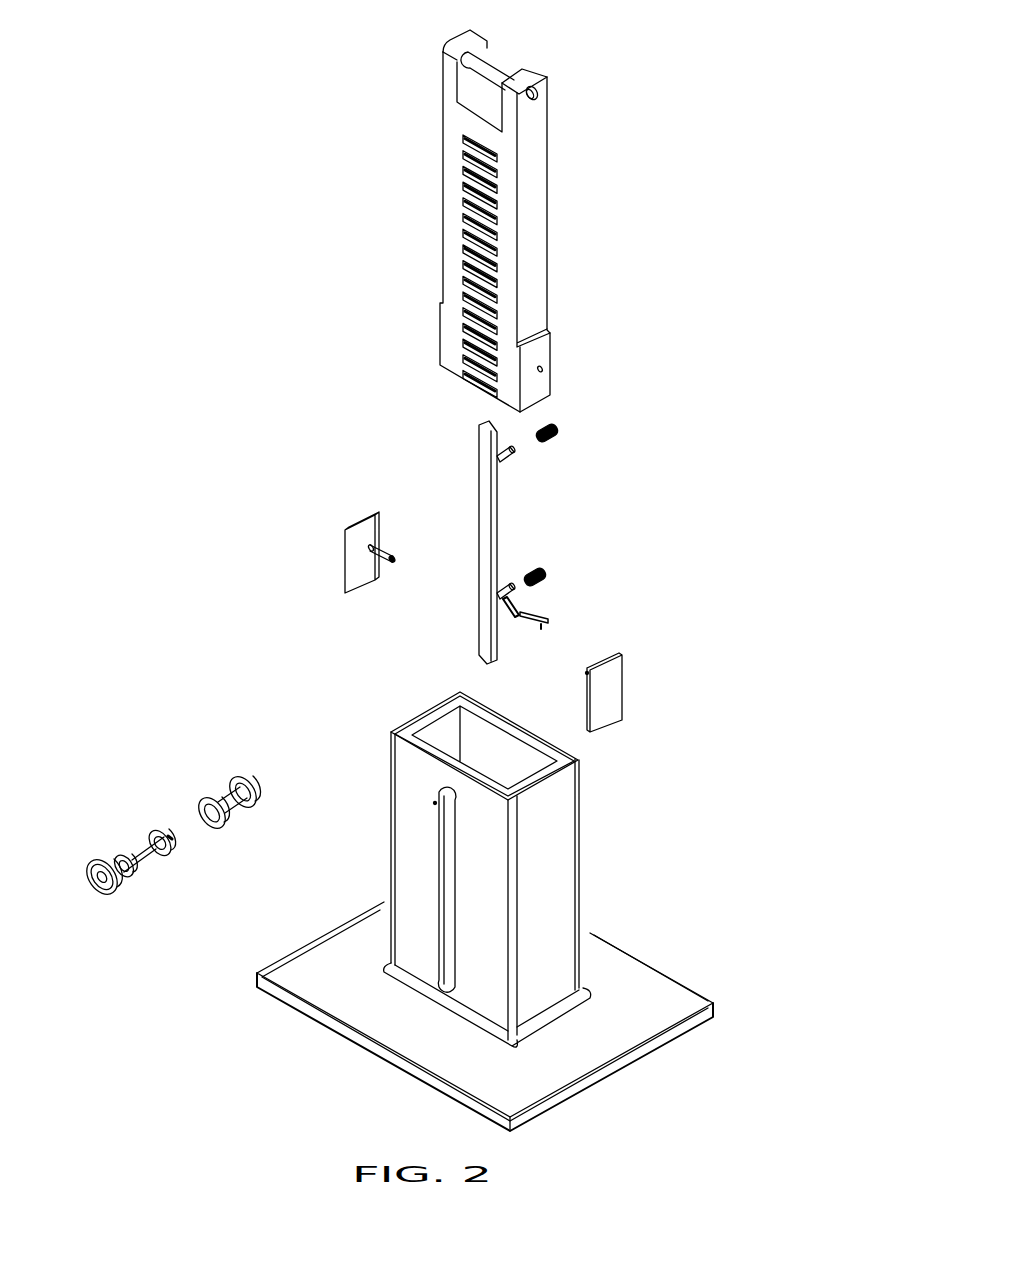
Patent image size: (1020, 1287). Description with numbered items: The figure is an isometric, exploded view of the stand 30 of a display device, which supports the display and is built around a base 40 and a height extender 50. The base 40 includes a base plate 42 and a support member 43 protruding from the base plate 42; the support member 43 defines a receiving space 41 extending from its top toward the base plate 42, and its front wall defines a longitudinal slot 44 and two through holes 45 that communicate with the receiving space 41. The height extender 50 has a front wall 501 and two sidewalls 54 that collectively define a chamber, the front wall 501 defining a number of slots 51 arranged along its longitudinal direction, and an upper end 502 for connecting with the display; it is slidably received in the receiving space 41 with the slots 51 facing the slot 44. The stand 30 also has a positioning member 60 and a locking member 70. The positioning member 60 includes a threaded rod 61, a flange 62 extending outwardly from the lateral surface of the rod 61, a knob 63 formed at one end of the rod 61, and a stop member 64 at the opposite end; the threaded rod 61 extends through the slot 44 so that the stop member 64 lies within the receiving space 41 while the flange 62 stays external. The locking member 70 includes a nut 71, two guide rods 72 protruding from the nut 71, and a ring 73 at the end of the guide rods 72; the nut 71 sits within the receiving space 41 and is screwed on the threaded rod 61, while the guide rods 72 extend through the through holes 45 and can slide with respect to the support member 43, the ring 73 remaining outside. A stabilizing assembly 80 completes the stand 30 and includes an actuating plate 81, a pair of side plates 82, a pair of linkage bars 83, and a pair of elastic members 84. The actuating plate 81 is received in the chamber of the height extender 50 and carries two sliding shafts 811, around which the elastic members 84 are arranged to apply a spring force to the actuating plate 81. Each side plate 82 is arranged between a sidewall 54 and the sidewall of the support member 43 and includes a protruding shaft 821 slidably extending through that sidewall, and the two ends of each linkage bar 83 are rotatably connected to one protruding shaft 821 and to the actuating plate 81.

The stand 30 is at (150, 85).
The base 40 is at (752, 744).
The receiving space 41 is at (510, 755).
The base plate 42 is at (595, 1017).
The support member 43 is at (550, 850).
The longitudinal slot 44 is at (450, 910).
The through holes 45 is at (465, 817).
The height extender 50 is at (416, 212).
The front wall 501 is at (503, 195).
The upper end 502 is at (466, 45).
The slots 51 is at (467, 243).
The sidewalls 54 is at (540, 382).
The positioning member 60 is at (228, 963).
The threaded rod 61 is at (145, 858).
The flange 62 is at (131, 878).
The knob 63 is at (92, 890).
The stop member 64 is at (162, 860).
The locking member 70 is at (121, 740).
The nut 71 is at (257, 792).
The guide rods 72 is at (222, 798).
The ring 73 is at (207, 810).
The stabilizing assembly 80 is at (372, 447).
The actuating plate 81 is at (490, 500).
The sliding shafts 811 is at (510, 458).
The side plates 82 is at (365, 537).
The protruding shaft 821 is at (383, 558).
The linkage bars 83 is at (545, 616).
The elastic members 84 is at (557, 440).